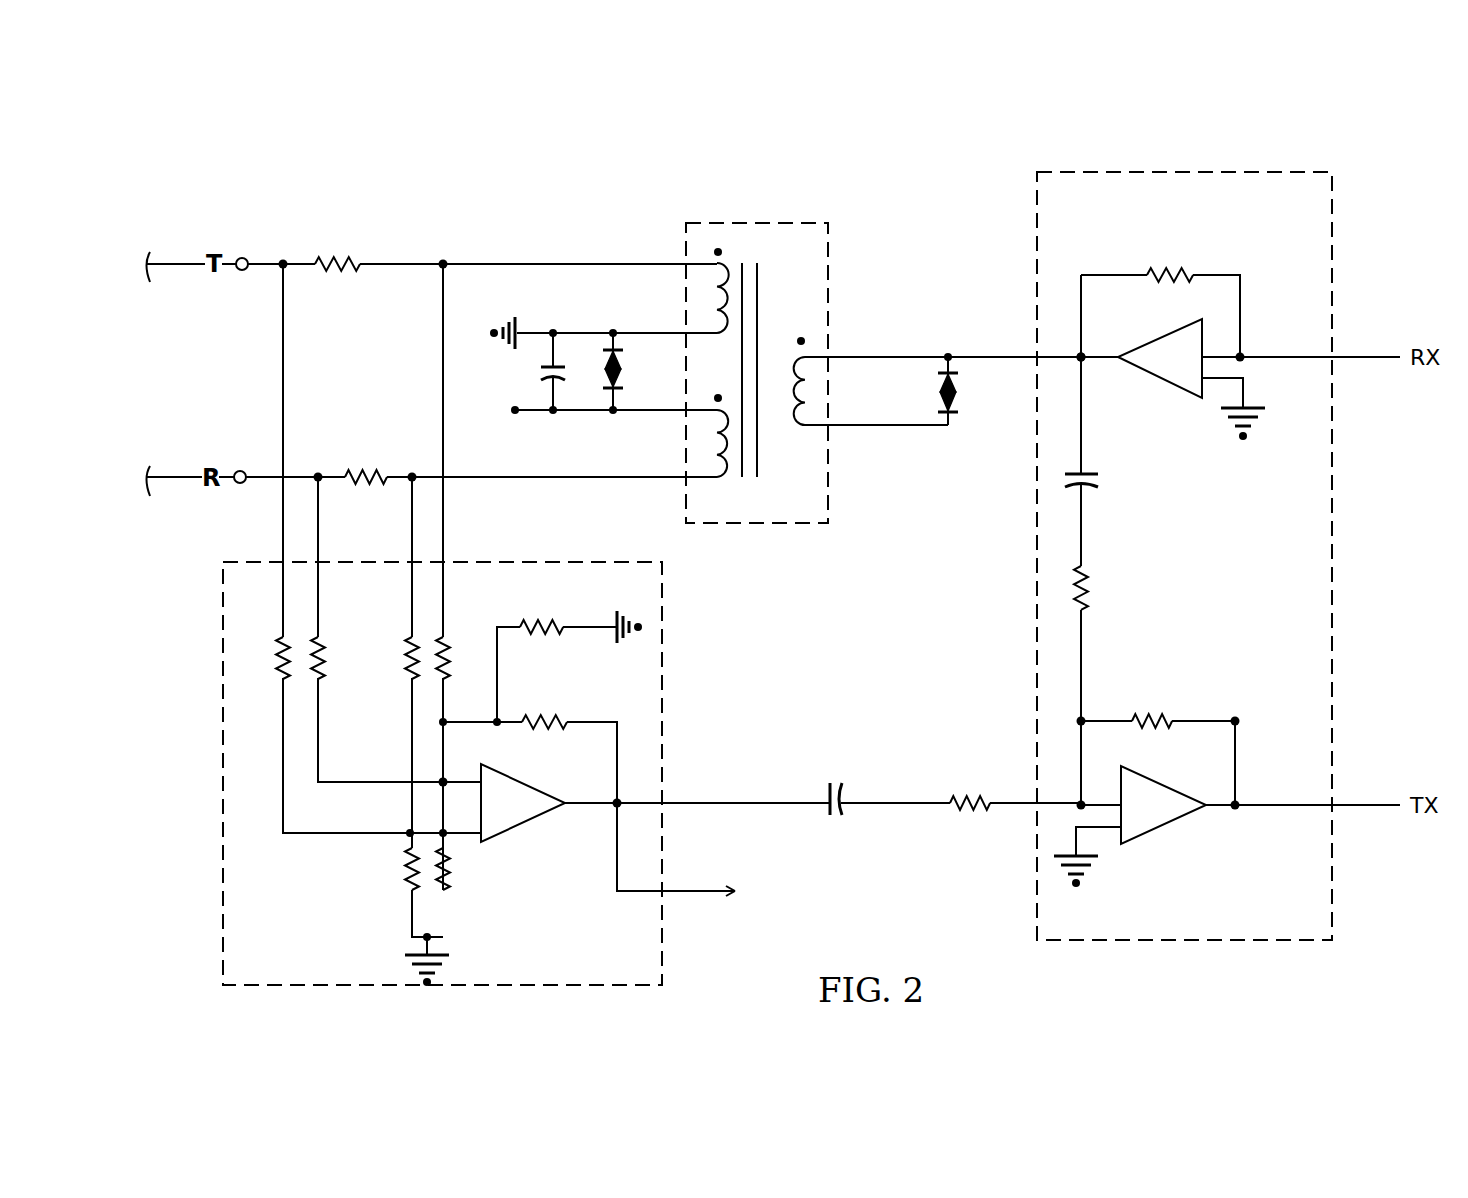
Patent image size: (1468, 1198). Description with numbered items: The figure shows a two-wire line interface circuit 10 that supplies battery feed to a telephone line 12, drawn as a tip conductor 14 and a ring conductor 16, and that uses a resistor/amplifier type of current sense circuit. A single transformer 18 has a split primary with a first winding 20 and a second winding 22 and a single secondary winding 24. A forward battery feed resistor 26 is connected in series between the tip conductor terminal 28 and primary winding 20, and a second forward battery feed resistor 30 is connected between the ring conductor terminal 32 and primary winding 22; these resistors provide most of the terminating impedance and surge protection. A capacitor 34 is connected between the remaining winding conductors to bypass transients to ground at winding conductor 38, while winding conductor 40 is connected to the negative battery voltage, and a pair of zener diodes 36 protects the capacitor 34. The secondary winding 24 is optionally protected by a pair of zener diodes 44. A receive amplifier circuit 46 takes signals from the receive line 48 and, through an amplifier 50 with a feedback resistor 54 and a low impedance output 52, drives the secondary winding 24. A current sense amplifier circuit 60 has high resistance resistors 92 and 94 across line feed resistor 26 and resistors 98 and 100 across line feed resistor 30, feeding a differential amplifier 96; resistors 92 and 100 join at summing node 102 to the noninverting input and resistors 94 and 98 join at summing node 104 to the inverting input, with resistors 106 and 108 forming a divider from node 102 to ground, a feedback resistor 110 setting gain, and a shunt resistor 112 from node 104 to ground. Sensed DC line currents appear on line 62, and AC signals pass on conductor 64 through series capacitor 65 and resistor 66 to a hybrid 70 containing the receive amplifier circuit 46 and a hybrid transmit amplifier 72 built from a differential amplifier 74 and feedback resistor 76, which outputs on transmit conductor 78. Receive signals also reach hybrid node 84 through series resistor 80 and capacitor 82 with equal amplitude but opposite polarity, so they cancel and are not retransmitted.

The two-wire line interface circuit 10 is at (981, 302).
The telephone line 12 is at (178, 228).
The tip conductor 14 is at (185, 264).
The ring conductor 16 is at (168, 477).
The transformer 18 is at (750, 223).
The first primary winding 20 is at (710, 262).
The second primary winding 22 is at (710, 481).
The secondary winding 24 is at (818, 352).
The forward battery feed resistor 26 is at (335, 257).
The tip conductor terminal 28 is at (248, 258).
The second forward battery feed resistor 30 is at (365, 470).
The ring conductor terminal 32 is at (246, 471).
The capacitor 34 is at (540, 367).
The pair of zener diodes 36 is at (634, 372).
The transformer winding conductor 38 is at (527, 332).
The transformer winding conductor 40 is at (545, 412).
The pair of zener diodes 44 is at (974, 402).
The receive amplifier circuit 46 is at (1217, 237).
The receive line (RX) 48 is at (1370, 358).
The amplifier 50 is at (1160, 380).
The low impedance output 52 is at (1100, 355).
The feedback resistor 54 is at (1166, 273).
The current sense amplifier circuit 60 is at (662, 667).
The line 62 is at (712, 891).
The conductor 64 is at (755, 802).
The series capacitor 65 is at (843, 798).
The resistor 66 is at (968, 800).
The hybrid 70 is at (1332, 612).
The hybrid transmit amplifier 72 is at (1215, 691).
The differential amplifier 74 is at (1160, 778).
The feedback resistor 76 is at (1148, 719).
The transmit (TX) conductor 78 is at (1345, 804).
The series resistor 80 is at (1090, 578).
The capacitor 82 is at (1100, 479).
The hybrid node 84 is at (1085, 719).
The high resistance resistor 92 is at (280, 672).
The high resistance resistor 94 is at (448, 668).
The differential amplifier 96 is at (515, 840).
The high resistance resistor 98 is at (323, 668).
The high resistance resistor 100 is at (410, 672).
The summing node 102 is at (406, 838).
The summing node 104 is at (446, 780).
The resistor 106 is at (406, 892).
The resistor 108 is at (448, 892).
The feedback resistor 110 is at (568, 720).
The shunt resistor 112 is at (552, 625).